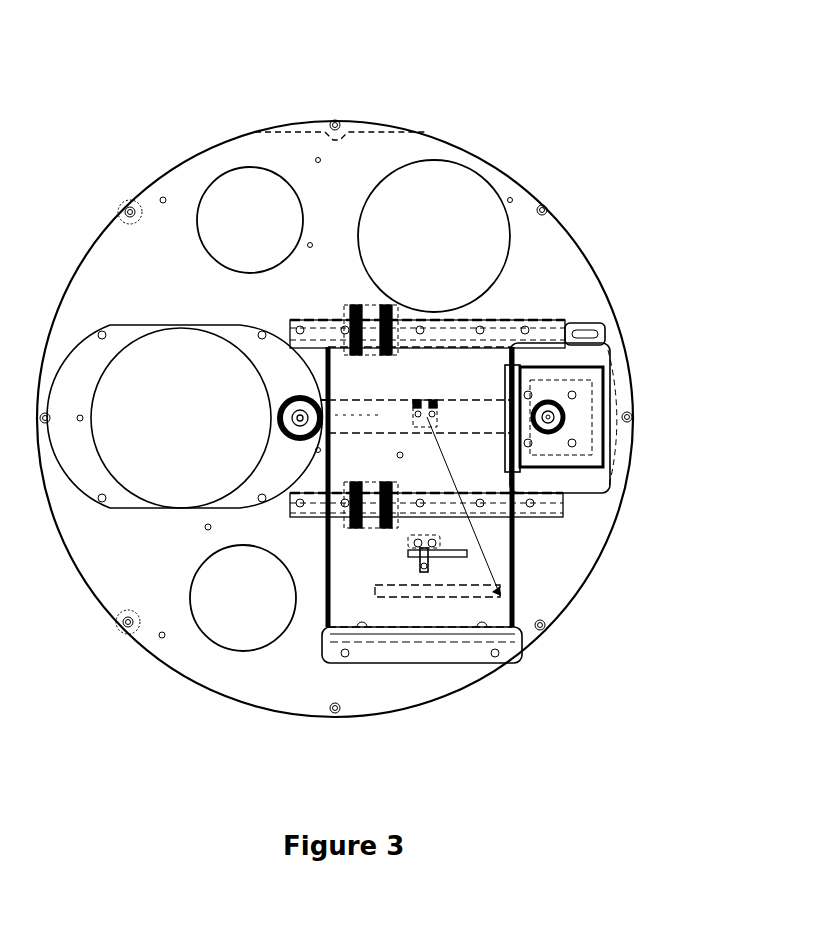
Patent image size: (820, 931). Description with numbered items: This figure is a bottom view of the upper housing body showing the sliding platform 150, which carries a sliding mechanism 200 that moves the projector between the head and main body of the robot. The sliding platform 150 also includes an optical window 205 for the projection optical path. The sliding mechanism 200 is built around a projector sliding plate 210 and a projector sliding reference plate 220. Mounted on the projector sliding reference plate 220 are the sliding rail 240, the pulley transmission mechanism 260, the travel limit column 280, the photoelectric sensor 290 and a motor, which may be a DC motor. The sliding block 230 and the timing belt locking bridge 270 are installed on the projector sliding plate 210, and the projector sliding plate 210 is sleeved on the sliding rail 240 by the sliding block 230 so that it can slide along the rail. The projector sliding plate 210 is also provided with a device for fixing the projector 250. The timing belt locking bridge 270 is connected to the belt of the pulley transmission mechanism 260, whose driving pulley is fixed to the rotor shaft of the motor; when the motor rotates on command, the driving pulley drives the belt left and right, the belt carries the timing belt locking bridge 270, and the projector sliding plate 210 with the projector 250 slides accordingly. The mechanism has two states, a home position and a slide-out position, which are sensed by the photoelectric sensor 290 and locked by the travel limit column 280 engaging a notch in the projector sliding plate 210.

The sliding platform 150 is at (593, 263).
The sliding mechanism 200 is at (622, 397).
The optical window 205 is at (572, 420).
The projector sliding plate 210 is at (190, 172).
The projector sliding reference plate 220 is at (277, 363).
The sliding block 230 is at (355, 302).
The sliding rail 240 is at (430, 316).
The projector 250 is at (463, 368).
The pulley transmission mechanism 260 is at (552, 380).
The timing belt locking bridge 270 is at (520, 623).
The travel limit column 280 is at (497, 600).
The photoelectric sensor 290 is at (423, 552).